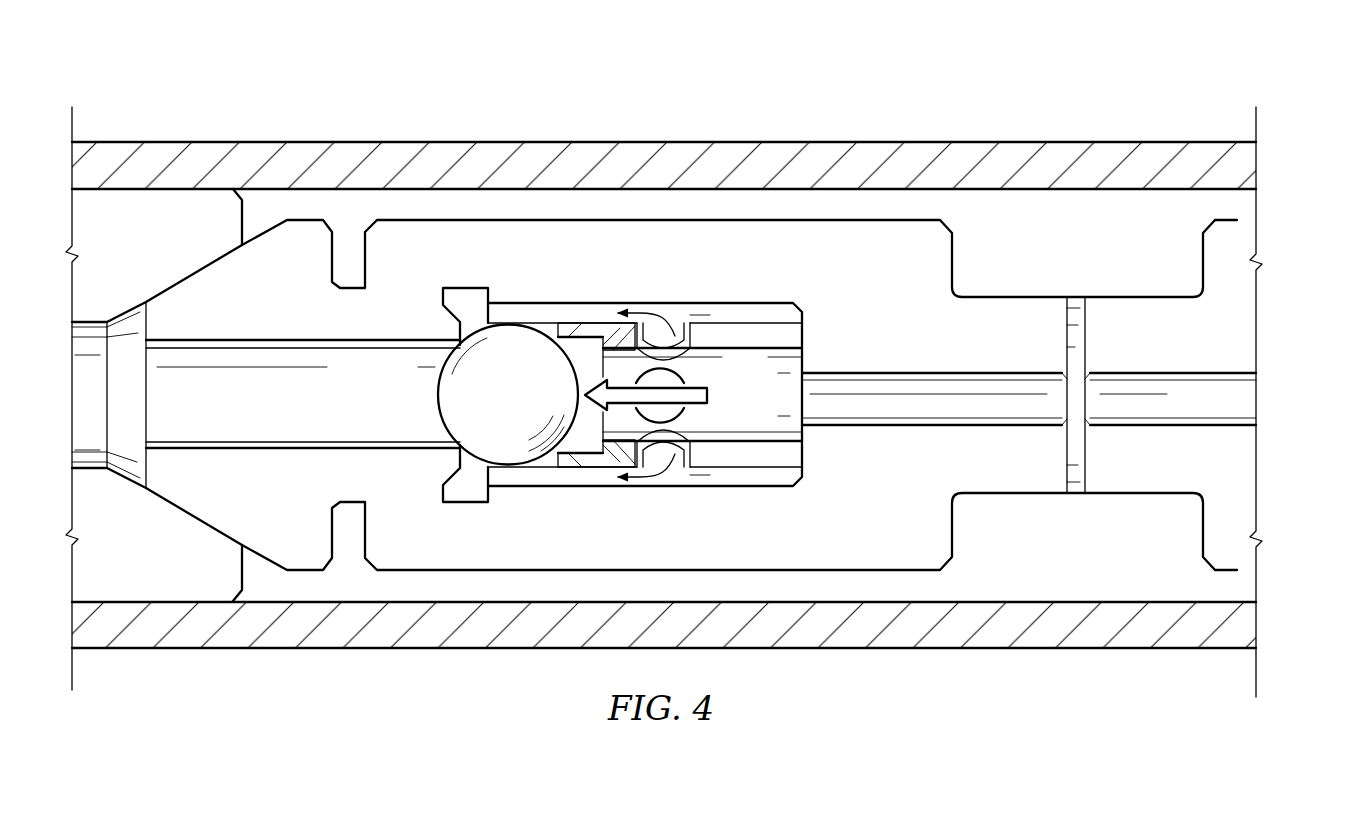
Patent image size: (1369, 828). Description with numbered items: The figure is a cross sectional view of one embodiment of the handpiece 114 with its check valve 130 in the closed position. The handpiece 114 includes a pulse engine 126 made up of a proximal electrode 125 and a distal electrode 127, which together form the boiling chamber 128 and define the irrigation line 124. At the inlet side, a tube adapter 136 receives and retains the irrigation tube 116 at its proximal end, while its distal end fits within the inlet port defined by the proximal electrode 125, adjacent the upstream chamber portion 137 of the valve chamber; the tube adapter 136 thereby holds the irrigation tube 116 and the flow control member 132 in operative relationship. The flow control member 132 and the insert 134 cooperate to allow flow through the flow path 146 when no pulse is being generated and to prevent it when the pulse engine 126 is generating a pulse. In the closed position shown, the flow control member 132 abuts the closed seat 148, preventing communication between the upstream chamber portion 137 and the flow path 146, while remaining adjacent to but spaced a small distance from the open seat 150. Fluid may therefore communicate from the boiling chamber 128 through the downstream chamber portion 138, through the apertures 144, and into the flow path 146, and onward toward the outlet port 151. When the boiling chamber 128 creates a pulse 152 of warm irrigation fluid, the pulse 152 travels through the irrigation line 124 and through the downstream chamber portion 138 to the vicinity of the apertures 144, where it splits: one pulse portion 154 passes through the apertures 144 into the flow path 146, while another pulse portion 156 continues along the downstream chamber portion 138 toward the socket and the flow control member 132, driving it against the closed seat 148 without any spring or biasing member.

The handpiece 114 is at (908, 110).
The irrigation tube 116 is at (170, 603).
The irrigation line 124 is at (1228, 425).
The proximal electrode 125 is at (735, 219).
The pulse engine 126 is at (1101, 145).
The distal electrode 127 is at (1237, 221).
The boiling chamber 128 is at (1073, 296).
The check valve 130 is at (543, 292).
The flow control member 132 is at (440, 408).
The insert 134 is at (580, 322).
The tube adapter 136 is at (267, 570).
The upstream chamber portion 137 is at (425, 385).
The downstream chamber portion 138 is at (765, 385).
The apertures 144 is at (660, 334).
The flow path 146 is at (526, 316).
The closed seat 148 is at (472, 320).
The open seat 150 is at (575, 350).
The outlet port 151 is at (1272, 385).
The pulse 152 is at (707, 405).
The pulse portion 154 is at (668, 338).
The pulse portion 156 is at (601, 412).